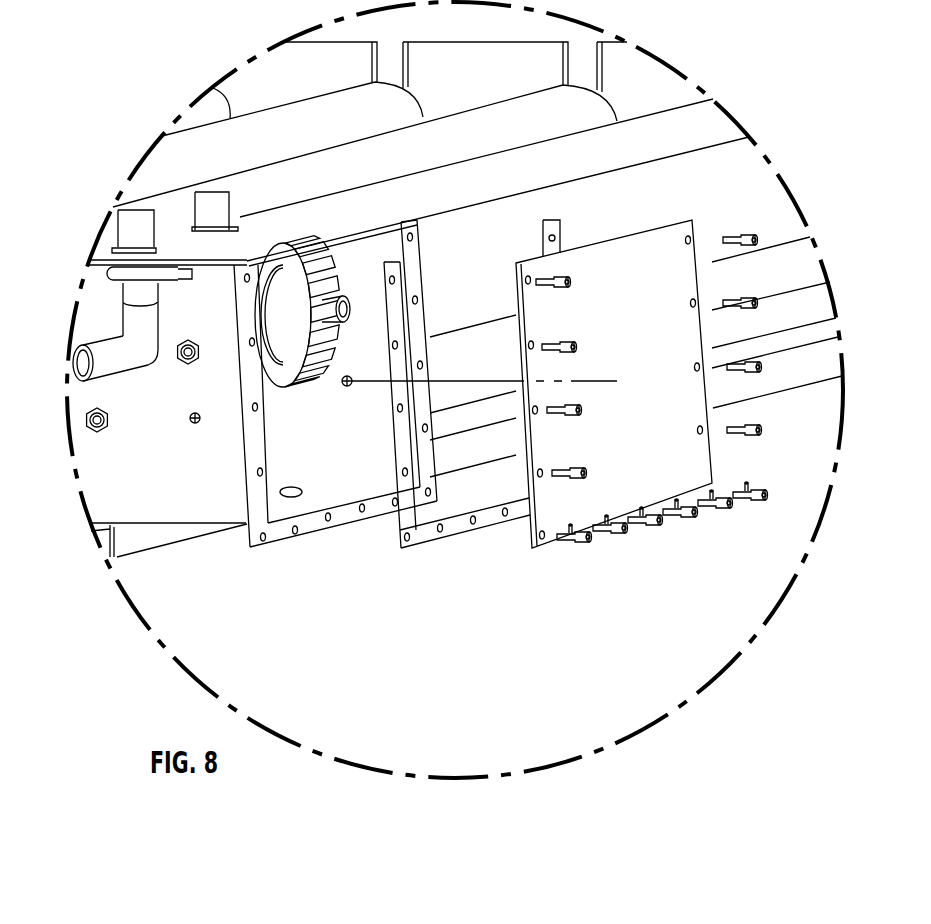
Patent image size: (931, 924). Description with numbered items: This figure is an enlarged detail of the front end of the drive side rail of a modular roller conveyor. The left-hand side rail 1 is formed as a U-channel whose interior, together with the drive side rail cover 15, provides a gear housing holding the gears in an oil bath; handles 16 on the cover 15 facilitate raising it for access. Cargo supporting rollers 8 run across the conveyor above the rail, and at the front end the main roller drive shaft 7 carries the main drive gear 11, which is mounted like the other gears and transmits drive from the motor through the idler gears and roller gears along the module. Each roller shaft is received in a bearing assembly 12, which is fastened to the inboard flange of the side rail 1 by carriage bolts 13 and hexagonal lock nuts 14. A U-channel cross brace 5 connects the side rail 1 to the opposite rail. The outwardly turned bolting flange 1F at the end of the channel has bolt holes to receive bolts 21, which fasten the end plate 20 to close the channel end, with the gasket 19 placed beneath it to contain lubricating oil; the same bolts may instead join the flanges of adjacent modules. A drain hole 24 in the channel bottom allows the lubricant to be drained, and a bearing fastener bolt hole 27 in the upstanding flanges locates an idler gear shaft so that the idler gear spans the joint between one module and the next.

The left-hand side rail 1 is at (192, 532).
The bolting flange of side rail 1F is at (261, 549).
The U-channel cross brace 5 is at (134, 557).
The main roller drive shaft 7 is at (85, 366).
The cargo supporting roller 8 is at (752, 176).
The main drive gear 11 is at (289, 392).
The bearing assembly 12 is at (142, 318).
The carriage bolt 13 is at (335, 306).
The hexagonal lock nut 14 is at (193, 341).
The drive side rail cover 15 is at (275, 233).
The handle 16 is at (132, 231).
The gasket 19 is at (403, 550).
The end plate 20 is at (536, 549).
The bolt 21 is at (751, 508).
The drain hole 24 is at (298, 498).
The bearing fastener bolt hole 27 is at (195, 424).